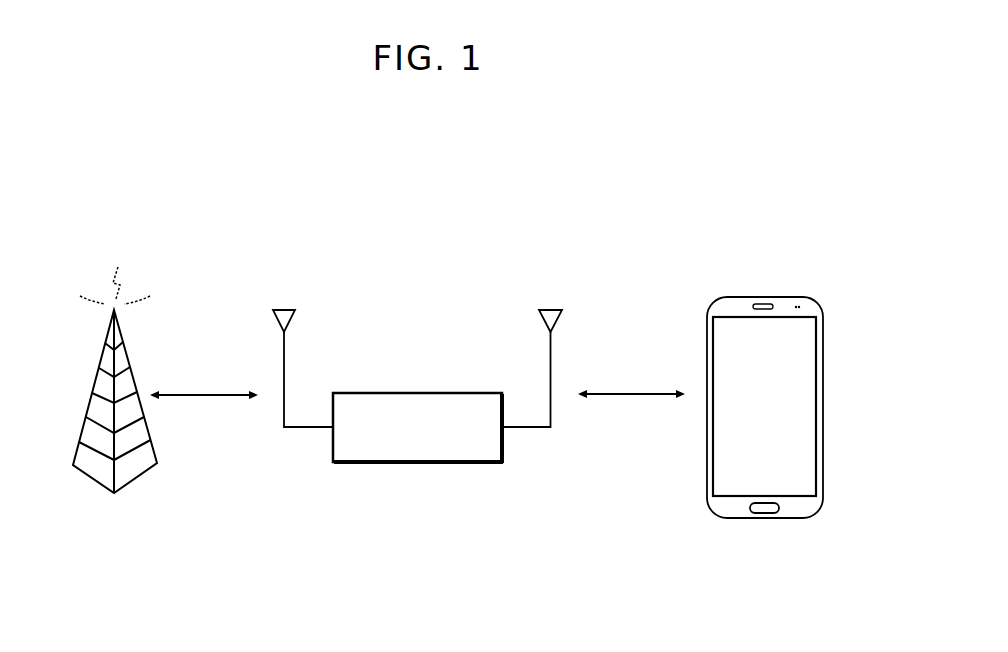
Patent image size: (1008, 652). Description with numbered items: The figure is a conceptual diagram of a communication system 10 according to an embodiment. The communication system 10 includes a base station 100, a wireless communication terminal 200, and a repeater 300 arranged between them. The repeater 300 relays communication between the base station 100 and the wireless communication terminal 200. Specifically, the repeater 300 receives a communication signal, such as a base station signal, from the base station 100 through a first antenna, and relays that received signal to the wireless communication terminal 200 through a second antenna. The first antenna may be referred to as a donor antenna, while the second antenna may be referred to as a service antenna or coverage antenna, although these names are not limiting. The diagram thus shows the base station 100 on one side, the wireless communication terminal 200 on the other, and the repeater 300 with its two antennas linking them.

The communication system 10 is at (678, 222).
The base station 100 is at (125, 357).
The wireless communication terminal 200 is at (780, 296).
The repeater 300 is at (432, 393).